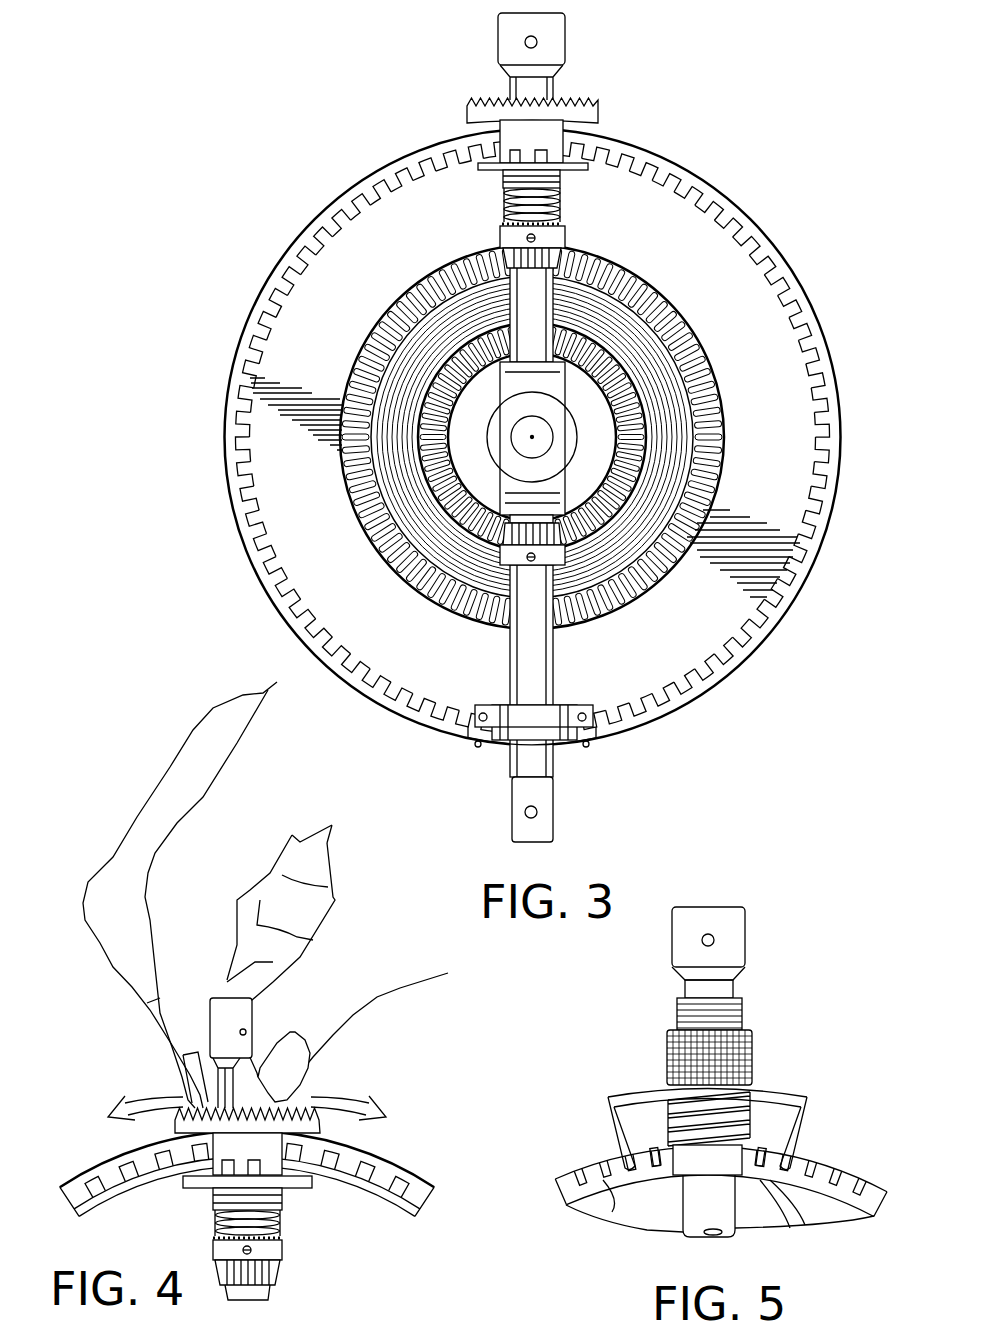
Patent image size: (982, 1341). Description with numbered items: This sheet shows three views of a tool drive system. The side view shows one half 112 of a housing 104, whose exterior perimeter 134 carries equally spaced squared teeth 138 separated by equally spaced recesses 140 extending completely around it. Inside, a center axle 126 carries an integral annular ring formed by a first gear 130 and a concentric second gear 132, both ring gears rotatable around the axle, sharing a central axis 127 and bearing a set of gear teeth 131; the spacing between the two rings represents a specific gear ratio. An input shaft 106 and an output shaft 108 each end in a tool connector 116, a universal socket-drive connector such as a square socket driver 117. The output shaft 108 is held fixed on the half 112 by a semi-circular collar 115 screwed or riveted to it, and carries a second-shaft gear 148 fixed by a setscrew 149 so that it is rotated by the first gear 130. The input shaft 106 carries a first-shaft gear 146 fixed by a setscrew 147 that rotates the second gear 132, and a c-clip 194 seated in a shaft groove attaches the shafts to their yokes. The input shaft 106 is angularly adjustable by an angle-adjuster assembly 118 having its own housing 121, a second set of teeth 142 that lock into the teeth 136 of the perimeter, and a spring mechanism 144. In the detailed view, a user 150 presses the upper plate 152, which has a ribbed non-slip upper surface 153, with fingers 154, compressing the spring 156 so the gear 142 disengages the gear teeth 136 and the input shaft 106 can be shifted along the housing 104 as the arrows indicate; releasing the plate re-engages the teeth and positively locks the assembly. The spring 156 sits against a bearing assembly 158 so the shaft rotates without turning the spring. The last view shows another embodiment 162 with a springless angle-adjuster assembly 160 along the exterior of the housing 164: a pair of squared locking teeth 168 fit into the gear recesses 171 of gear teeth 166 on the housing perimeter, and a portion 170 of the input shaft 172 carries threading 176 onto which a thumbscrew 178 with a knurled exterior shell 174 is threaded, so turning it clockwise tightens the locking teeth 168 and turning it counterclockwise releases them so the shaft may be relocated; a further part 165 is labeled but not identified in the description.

In FIG. 4, the housing 104 is at (398, 1165).
In FIG. 3, the input shaft 106 is at (555, 90).
In FIG. 4, the input shaft 106 is at (225, 1085).
In FIG. 3, the output shaft 108 is at (555, 765).
In FIG. 3, the half 112 is at (312, 199).
In FIG. 3, the collar 115 is at (490, 740).
In FIG. 3, the tool connector 116 is at (566, 40).
In FIG. 3, the square socket driver 117 is at (498, 35).
In FIG. 3, the angle-adjuster assembly 118 is at (612, 114).
In FIG. 3, the housing 121 is at (556, 128).
In FIG. 3, the center axle 126 is at (445, 432).
In FIG. 3, the central axis 127 is at (534, 436).
In FIG. 3, the first gear 130 is at (595, 420).
In FIG. 3, the gear teeth 131 is at (372, 358).
In FIG. 3, the second gear 132 is at (712, 442).
In FIG. 3, the exterior perimeter 134 is at (303, 235).
In FIG. 3, the teeth 136 is at (265, 275).
In FIG. 4, the teeth 136 is at (120, 1170).
In FIG. 3, the teeth 138 is at (368, 215).
In FIG. 3, the recesses 140 is at (408, 162).
In FIG. 3, the second set of teeth 142 is at (478, 160).
In FIG. 4, the second set of teeth 142 is at (215, 1245).
In FIG. 4, the spring mechanism 144 is at (283, 1210).
In FIG. 3, the first-shaft gear 146 is at (565, 248).
In FIG. 3, the setscrew 147 is at (537, 238).
In FIG. 3, the second-shaft gear 148 is at (505, 565).
In FIG. 3, the setscrew 149 is at (485, 600).
In FIG. 4, the user 150 is at (128, 840).
In FIG. 3, the upper plate 152 is at (487, 100).
In FIG. 4, the upper plate 152 is at (312, 1100).
In FIG. 4, the non-slip upper surface 153 is at (312, 1080).
In FIG. 4, the fingers 154 is at (148, 1004).
In FIG. 3, the spring 156 is at (560, 205).
In FIG. 4, the spring 156 is at (283, 1225).
In FIG. 3, the bearing assembly 158 is at (502, 232).
In FIG. 4, the bearing assembly 158 is at (283, 1240).
In FIG. 5, the angle-adjuster assembly 160 is at (785, 1087).
In FIG. 5, the embodiment 162 is at (800, 920).
In FIG. 5, the housing 164 is at (590, 1170).
In FIG. 5, the spring 165 is at (672, 1098).
In FIG. 5, the gear teeth 166 is at (805, 1170).
In FIG. 5, the locking teeth 168 is at (615, 1103).
In FIG. 5, the portion 170 is at (742, 1003).
In FIG. 5, the gear recesses 171 is at (612, 1195).
In FIG. 5, the input shaft 172 is at (686, 990).
In FIG. 5, the exterior shell 174 is at (752, 1060).
In FIG. 5, the threading 176 is at (678, 1018).
In FIG. 5, the thumbscrew 178 is at (746, 1032).
In FIG. 3, the c-clip 194 is at (480, 505).